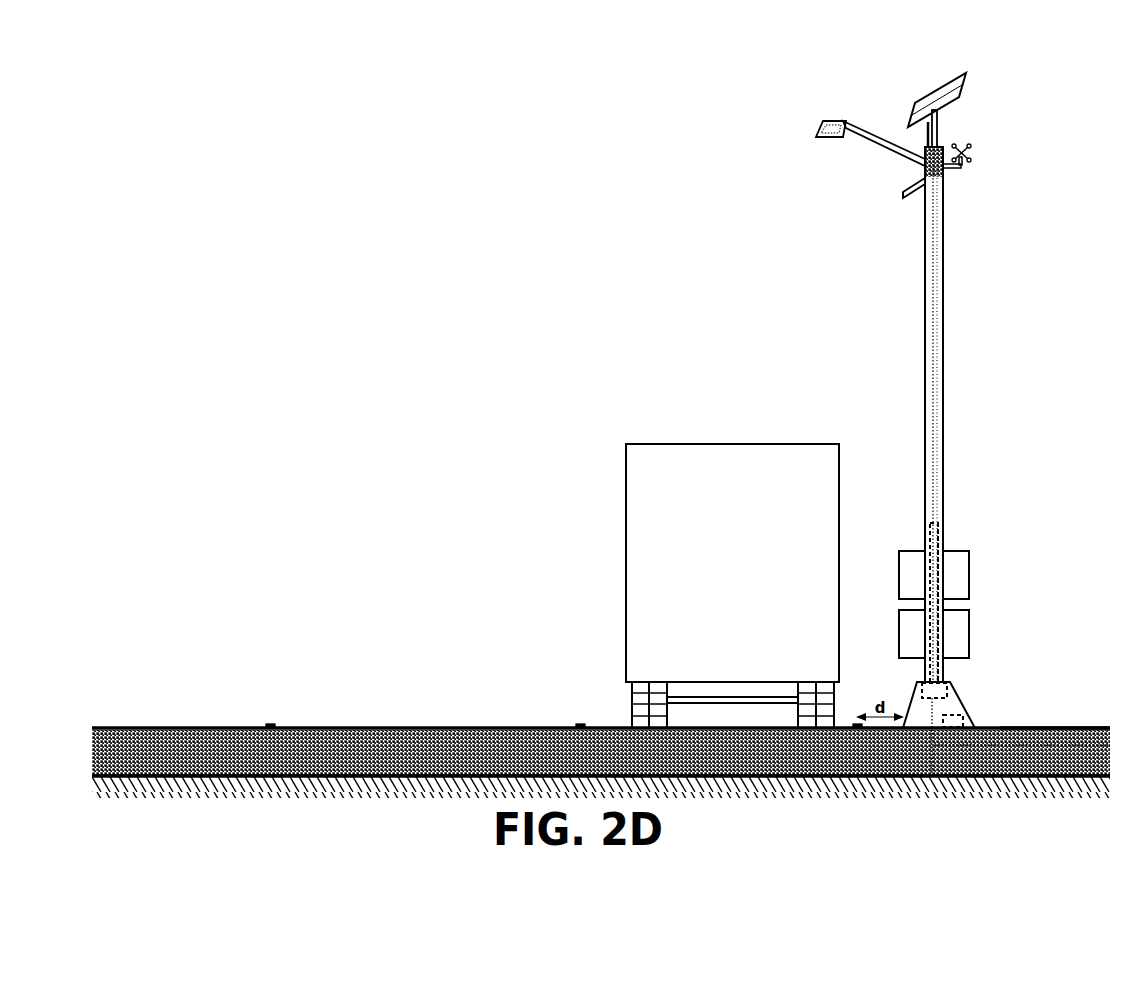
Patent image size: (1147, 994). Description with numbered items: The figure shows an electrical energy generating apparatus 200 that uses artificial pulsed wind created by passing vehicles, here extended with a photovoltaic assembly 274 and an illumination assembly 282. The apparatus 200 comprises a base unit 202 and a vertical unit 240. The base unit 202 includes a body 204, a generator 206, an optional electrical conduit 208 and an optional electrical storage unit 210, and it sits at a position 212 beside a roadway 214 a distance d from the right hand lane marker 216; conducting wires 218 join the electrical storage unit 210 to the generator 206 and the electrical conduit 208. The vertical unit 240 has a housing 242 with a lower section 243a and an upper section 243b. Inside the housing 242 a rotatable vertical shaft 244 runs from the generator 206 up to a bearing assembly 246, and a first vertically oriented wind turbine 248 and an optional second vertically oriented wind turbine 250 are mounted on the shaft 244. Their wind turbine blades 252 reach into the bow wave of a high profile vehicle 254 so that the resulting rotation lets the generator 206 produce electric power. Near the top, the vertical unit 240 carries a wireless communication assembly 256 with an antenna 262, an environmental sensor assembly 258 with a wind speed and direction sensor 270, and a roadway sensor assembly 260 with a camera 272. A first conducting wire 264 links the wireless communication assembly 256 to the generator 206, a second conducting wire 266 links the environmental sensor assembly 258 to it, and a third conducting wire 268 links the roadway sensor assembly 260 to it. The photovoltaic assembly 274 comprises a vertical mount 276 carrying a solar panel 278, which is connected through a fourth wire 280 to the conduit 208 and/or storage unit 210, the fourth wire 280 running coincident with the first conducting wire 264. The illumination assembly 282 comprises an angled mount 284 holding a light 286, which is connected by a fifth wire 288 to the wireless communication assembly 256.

The apparatus 200 is at (940, 66).
The base unit 202 is at (998, 717).
The body 204 is at (915, 702).
The generator 206 is at (950, 705).
The electrical conduit 208 is at (1080, 727).
The electrical storage unit 210 is at (965, 717).
The position 212 is at (930, 775).
The roadway 214 is at (398, 714).
The right hand lane marker 216 is at (854, 732).
The conducting wires 218 is at (960, 690).
The vertical unit 240 is at (975, 300).
The housing 242 is at (922, 418).
The lower section 243a is at (1025, 518).
The upper section 243b is at (1020, 226).
The rotatable vertical shaft 244 is at (929, 536).
The bearing assembly 246 is at (939, 523).
The first vertically oriented wind turbine 248 is at (985, 632).
The second vertically oriented wind turbine 250 is at (985, 573).
The wind turbine blades 252 is at (898, 568).
The high profile vehicle 254 is at (732, 586).
The wireless communication assembly 256 is at (910, 142).
The environmental sensor assembly 258 is at (978, 167).
The roadway sensor assembly 260 is at (905, 184).
The antenna 262 is at (924, 128).
The first conducting wire 264 is at (935, 378).
The second conducting wire 266 is at (944, 176).
The third conducting wire 268 is at (912, 196).
The wind speed and direction sensor 270 is at (962, 138).
The camera 272 is at (905, 190).
The photovoltaic assembly 274 is at (961, 58).
The vertical mount 276 is at (942, 120).
The solar panel 278 is at (932, 96).
The fourth wire 280 is at (937, 396).
The illumination assembly 282 is at (825, 104).
The angled mount 284 is at (855, 131).
The light 286 is at (820, 122).
The fifth wire 288 is at (905, 170).